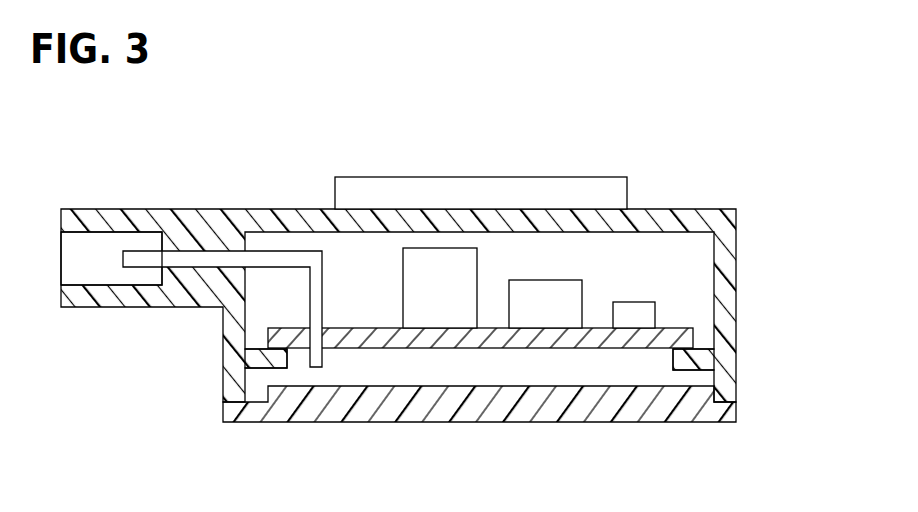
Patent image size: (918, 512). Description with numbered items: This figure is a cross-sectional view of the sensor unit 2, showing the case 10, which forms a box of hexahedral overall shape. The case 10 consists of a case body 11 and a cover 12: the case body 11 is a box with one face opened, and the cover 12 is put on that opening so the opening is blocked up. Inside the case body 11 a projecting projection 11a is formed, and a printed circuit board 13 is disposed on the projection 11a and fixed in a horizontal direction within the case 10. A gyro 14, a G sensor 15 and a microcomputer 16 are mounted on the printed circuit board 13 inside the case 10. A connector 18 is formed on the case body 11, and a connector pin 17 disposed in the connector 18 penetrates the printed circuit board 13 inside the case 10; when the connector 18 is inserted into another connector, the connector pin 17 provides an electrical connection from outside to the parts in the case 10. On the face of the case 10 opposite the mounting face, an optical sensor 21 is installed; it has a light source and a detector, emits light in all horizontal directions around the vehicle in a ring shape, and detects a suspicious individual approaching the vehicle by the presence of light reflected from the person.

The vehicle / device equipped with sensor module 2 is at (748, 182).
The case 10 is at (682, 209).
The case body 11 is at (737, 258).
The projection 11a is at (270, 368).
The cover 12 is at (623, 423).
The printed circuit board 13 is at (390, 348).
The gyro 14 is at (403, 276).
The G sensor 15 is at (542, 280).
The microcomputer 16 is at (630, 302).
The connector pin 17 is at (323, 297).
The connector 18 is at (130, 307).
The optical sensor 21 is at (535, 177).